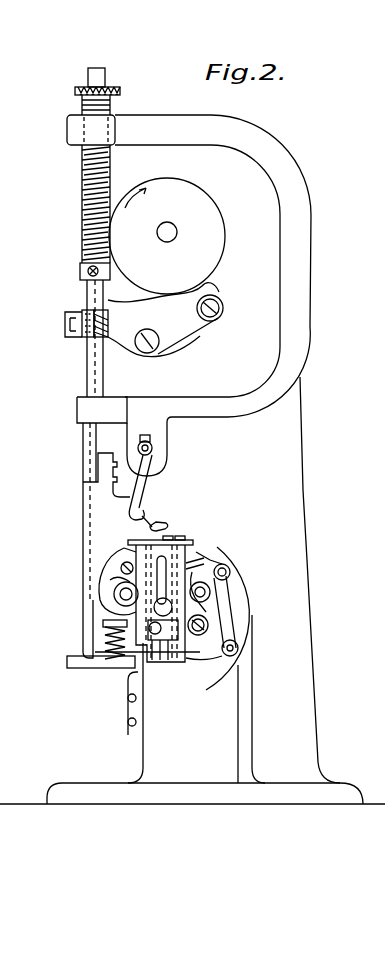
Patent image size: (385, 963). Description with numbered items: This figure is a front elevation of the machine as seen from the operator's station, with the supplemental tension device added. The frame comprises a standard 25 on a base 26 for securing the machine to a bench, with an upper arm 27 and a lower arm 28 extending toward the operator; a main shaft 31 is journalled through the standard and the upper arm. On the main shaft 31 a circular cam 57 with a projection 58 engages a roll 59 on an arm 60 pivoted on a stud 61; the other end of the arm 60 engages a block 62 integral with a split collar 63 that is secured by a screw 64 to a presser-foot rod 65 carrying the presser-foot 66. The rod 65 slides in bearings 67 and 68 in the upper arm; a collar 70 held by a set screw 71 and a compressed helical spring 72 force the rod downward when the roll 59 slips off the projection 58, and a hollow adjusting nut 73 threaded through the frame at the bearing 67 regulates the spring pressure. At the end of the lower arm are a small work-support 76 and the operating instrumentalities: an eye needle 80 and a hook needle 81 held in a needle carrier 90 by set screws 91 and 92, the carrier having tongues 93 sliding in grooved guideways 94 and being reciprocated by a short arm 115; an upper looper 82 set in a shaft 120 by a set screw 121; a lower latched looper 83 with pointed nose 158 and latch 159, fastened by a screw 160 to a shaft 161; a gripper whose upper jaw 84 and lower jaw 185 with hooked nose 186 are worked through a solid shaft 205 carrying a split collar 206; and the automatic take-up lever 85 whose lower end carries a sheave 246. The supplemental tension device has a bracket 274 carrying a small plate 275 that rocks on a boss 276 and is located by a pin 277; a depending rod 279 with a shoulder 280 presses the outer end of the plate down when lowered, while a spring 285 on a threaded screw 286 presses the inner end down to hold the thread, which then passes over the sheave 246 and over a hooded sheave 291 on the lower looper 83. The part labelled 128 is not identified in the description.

The standard 25 is at (304, 510).
The base 26 is at (346, 789).
The upper arm 27 is at (311, 256).
The lower arm 28 is at (250, 602).
The main shaft 31 is at (174, 232).
The circular cam 57 is at (224, 234).
The projection 58 is at (205, 290).
The roll 59 is at (223, 308).
The arm 60 is at (188, 332).
The stud 61 is at (155, 344).
The block 62 is at (65, 324).
The split collar 63 is at (108, 324).
The screw 64 is at (84, 317).
The presser-foot rod 65 is at (92, 372).
The presser-foot 66 is at (158, 525).
The bearing 67 is at (70, 130).
The bearing 68 is at (77, 416).
The collar 70 is at (80, 267).
The set screw 71 is at (110, 269).
The helical spring 72 is at (112, 177).
The hollow adjusting nut 73 is at (112, 109).
The work-support 76 is at (172, 537).
The eye needle 80 is at (156, 560).
The hook needle 81 is at (205, 556).
The upper looper 82 is at (148, 480).
The lower latched looper 83 is at (228, 564).
The upper jaw 84 is at (121, 568).
The take-up lever 85 is at (224, 611).
The needle carrier 90 is at (163, 645).
The set screw 91 is at (153, 645).
The set screw 92 is at (175, 650).
The lateral vertical tongues 93 is at (145, 673).
The vertical grooved guideways 94 is at (130, 664).
The short arm 115 is at (210, 591).
The shaft 120 is at (152, 446).
The set screw 121 is at (153, 450).
The lever arm 128 is at (160, 462).
The pointed nose 158 is at (190, 537).
The latch 159 is at (183, 567).
The screw 160 is at (209, 624).
The shaft 161 is at (230, 655).
The lower jaw 185 is at (118, 582).
The hooked nose 186 is at (125, 555).
The solid shaft 205 is at (114, 596).
The split collar 206 is at (125, 606).
The sheave 246 is at (238, 647).
The bracket 274 is at (143, 713).
The small plate 275 is at (142, 666).
The boss 276 is at (120, 661).
The pin 277 is at (135, 666).
The rod 279 is at (88, 506).
The shoulder 280 is at (83, 650).
The spring 285 is at (110, 662).
The threaded screw 286 is at (103, 624).
The hooded sheave 291 is at (231, 571).